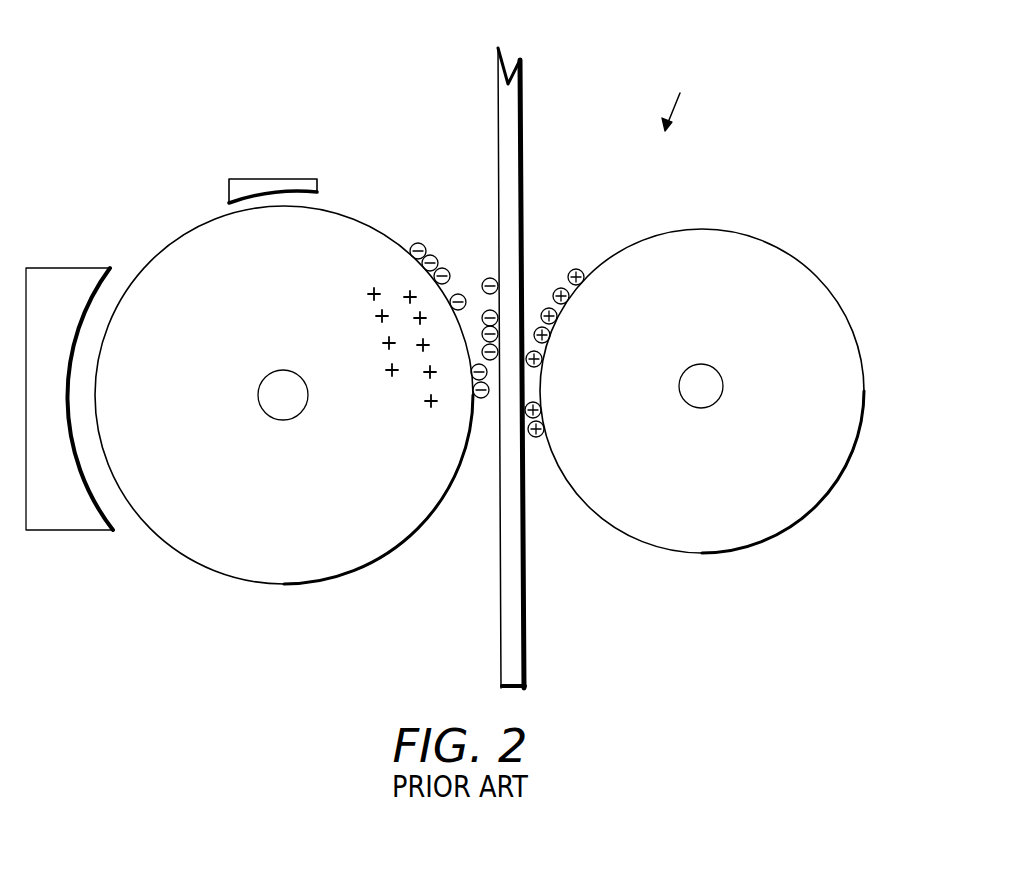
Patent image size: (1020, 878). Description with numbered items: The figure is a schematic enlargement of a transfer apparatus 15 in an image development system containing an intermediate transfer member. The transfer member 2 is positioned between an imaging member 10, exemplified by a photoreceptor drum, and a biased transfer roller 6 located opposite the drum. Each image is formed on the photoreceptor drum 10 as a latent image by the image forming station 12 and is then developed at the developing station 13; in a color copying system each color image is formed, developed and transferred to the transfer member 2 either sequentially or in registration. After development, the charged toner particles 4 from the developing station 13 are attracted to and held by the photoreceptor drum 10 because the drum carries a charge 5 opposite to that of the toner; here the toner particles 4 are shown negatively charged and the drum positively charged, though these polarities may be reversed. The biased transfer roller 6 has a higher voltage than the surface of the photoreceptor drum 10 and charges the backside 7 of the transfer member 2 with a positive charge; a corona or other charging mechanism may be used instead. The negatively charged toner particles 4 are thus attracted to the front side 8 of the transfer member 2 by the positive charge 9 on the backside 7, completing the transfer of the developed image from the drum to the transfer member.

The transfer member 2 is at (506, 360).
The toner particles 4 is at (425, 245).
The charge 5 is at (373, 290).
The transfer roller 6 is at (655, 538).
The backside 7 is at (522, 83).
The front side 8 is at (495, 148).
The positive charge 9 is at (578, 270).
The imaging member 10 is at (262, 570).
The image forming station 12 is at (73, 283).
The developing station 13 is at (275, 182).
The transfer apparatus 15 is at (689, 89).